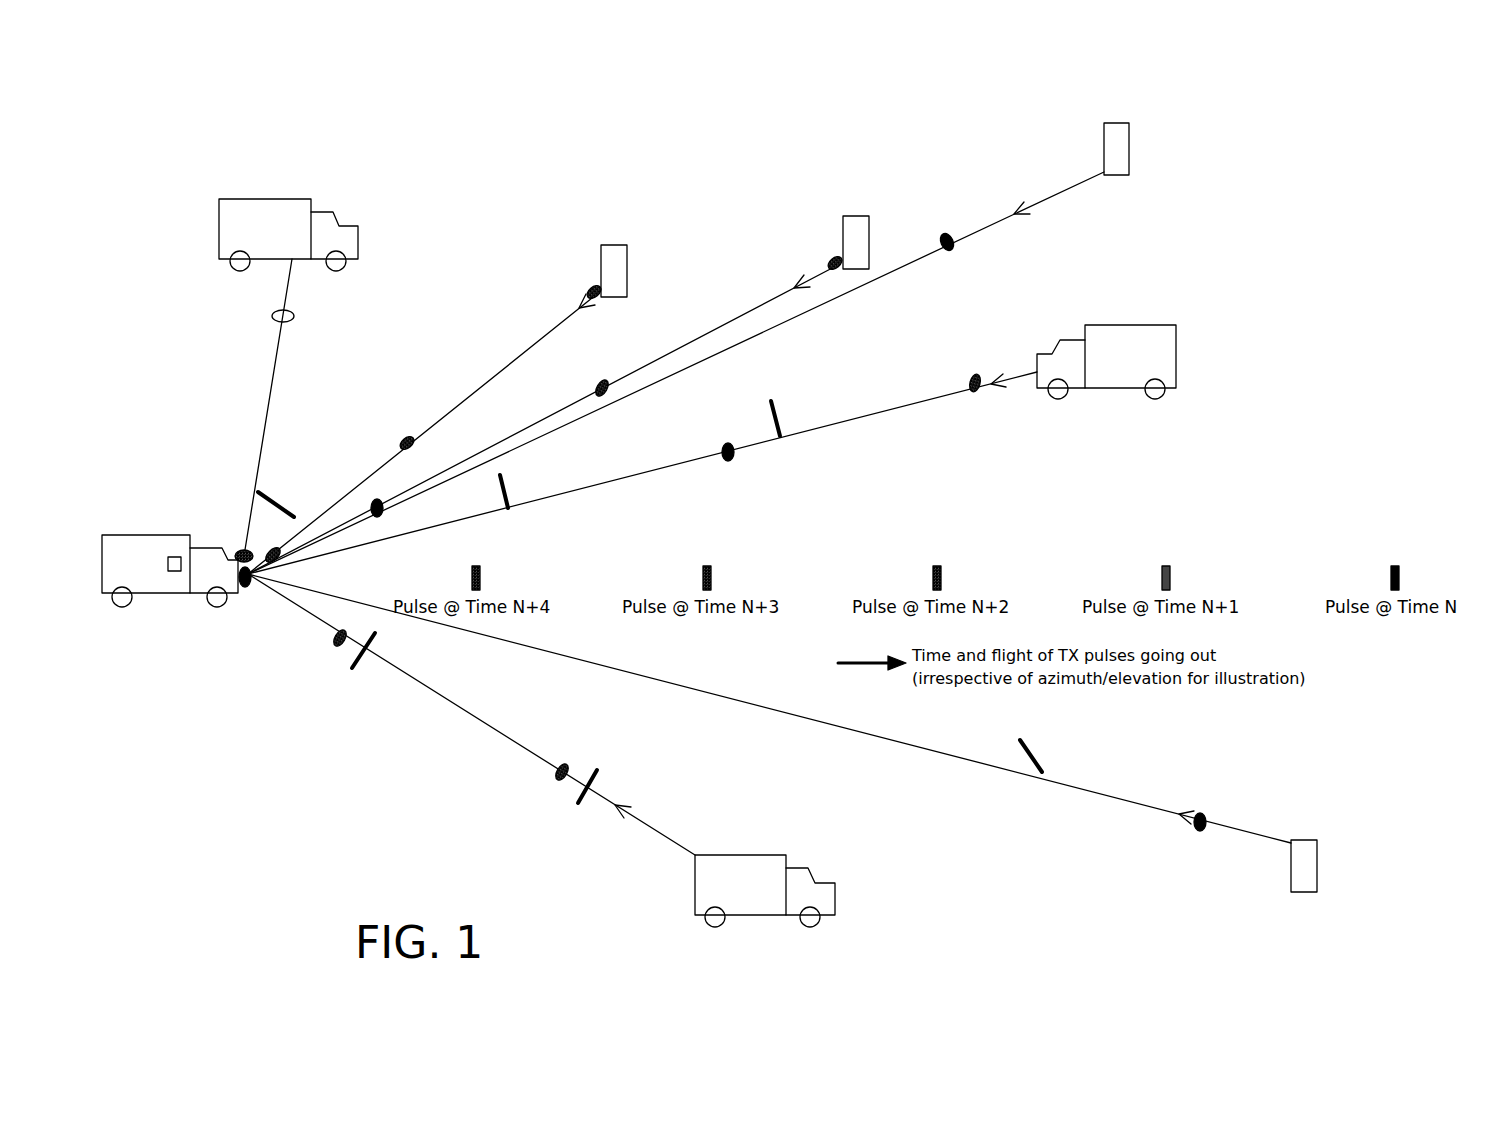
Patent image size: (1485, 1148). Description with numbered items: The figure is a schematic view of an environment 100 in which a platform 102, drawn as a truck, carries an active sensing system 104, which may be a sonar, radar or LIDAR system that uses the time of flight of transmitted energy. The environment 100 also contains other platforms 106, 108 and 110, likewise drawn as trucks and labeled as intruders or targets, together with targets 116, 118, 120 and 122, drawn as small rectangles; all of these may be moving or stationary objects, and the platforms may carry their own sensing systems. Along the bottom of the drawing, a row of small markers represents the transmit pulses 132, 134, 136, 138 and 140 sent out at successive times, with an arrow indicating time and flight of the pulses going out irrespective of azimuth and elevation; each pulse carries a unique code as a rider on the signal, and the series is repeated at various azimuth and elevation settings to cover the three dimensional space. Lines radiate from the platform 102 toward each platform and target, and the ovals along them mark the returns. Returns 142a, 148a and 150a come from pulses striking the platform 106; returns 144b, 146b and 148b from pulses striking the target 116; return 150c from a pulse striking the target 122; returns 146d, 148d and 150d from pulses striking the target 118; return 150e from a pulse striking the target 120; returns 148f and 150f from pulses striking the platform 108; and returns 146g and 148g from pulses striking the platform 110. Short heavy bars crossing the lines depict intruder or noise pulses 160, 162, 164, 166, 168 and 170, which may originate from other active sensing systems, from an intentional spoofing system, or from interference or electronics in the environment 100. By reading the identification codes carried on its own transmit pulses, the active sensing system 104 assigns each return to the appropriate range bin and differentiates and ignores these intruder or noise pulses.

The environment 100 is at (922, 76).
The platform 102 is at (140, 540).
The active sensing system 104 is at (175, 556).
The platform 106 is at (345, 226).
The platform 108 is at (1096, 324).
The platform 110 is at (762, 853).
The target 116 is at (628, 258).
The target 118 is at (869, 226).
The target 120 is at (1129, 133).
The target 122 is at (1317, 852).
The transmit pulse 132 is at (478, 564).
The transmit pulse 134 is at (708, 564).
The transmit pulse 136 is at (938, 564).
The transmit pulse 138 is at (1166, 564).
The transmit pulse 140 is at (1395, 564).
The return 142a is at (294, 316).
The return 144b is at (588, 288).
The return 146b is at (405, 435).
The return 146d is at (830, 258).
The return 146g is at (556, 780).
The return 148a is at (236, 552).
The return 148b is at (282, 548).
The return 148d is at (600, 380).
The return 148f is at (974, 375).
The return 148g is at (334, 646).
The return 150a is at (248, 590).
The return 150c is at (946, 252).
The return 150d is at (382, 498).
The return 150e is at (1202, 812).
The return 150f is at (725, 444).
The intruder or noise pulse 160 is at (272, 492).
The intruder or noise pulse 162 is at (505, 490).
The intruder or noise pulse 164 is at (778, 418).
The intruder or noise pulse 166 is at (1030, 752).
The intruder or noise pulse 168 is at (362, 664).
The intruder or noise pulse 170 is at (598, 778).